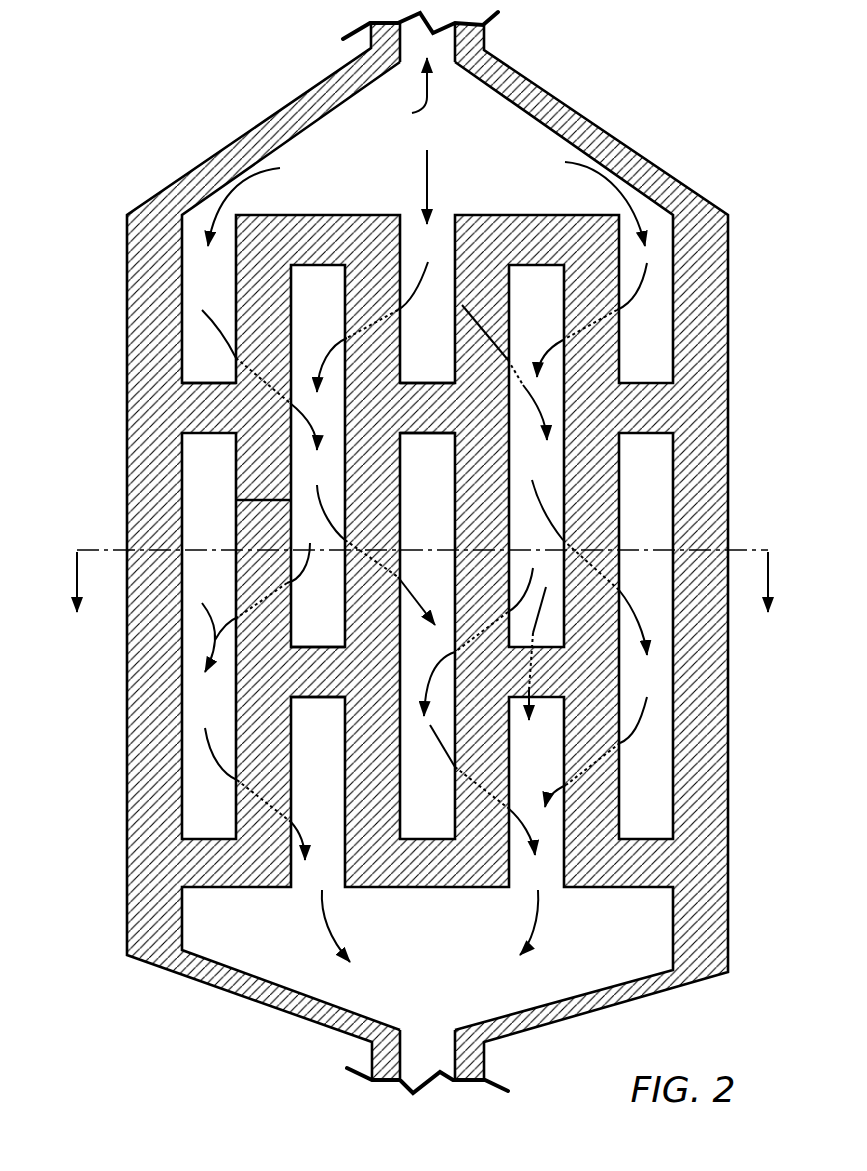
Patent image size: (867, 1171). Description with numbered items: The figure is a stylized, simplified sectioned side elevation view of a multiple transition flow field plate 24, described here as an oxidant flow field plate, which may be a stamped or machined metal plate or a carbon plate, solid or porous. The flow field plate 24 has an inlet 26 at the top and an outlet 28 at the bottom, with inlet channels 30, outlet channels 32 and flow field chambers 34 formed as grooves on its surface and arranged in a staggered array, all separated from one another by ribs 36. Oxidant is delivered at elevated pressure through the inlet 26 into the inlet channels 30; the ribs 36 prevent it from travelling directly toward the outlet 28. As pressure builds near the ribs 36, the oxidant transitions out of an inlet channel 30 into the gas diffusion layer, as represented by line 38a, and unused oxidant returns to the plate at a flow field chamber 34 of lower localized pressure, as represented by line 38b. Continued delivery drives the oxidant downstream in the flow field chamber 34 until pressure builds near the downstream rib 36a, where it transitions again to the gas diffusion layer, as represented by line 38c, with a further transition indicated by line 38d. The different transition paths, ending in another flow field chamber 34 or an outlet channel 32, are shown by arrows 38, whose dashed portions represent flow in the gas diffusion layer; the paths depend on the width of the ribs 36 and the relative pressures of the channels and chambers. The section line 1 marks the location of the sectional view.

The flow field plate 24 is at (643, 95).
The inlet 26 is at (417, 123).
The outlet 28 is at (421, 1045).
The inlet channels 30 is at (196, 295).
The outlet channels 32 is at (304, 745).
The flow field chambers 34 is at (301, 305).
The ribs 36 is at (423, 407).
The downstream rib 36a is at (313, 670).
The arrows 38 is at (538, 608).
The line 38a is at (216, 333).
The line 38b is at (303, 438).
The line 38c is at (309, 571).
The fourth flow opening 38d is at (245, 720).
The section line 1 is at (422, 599).